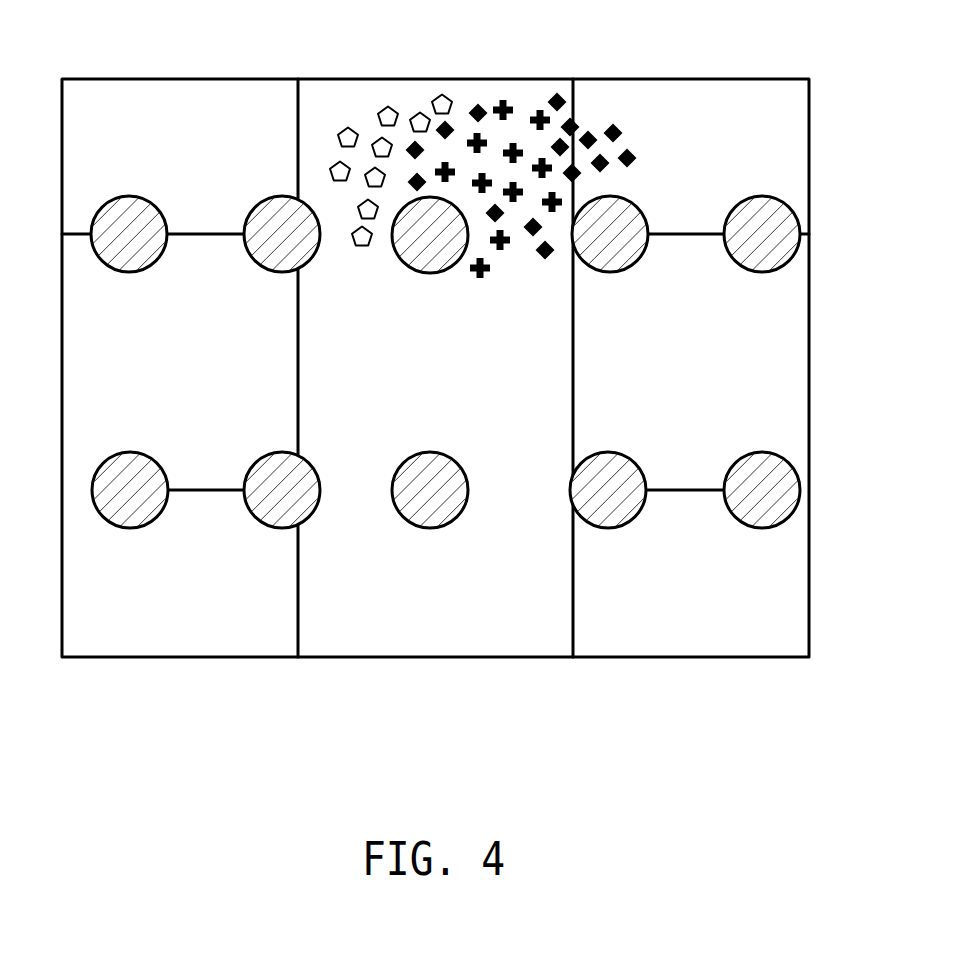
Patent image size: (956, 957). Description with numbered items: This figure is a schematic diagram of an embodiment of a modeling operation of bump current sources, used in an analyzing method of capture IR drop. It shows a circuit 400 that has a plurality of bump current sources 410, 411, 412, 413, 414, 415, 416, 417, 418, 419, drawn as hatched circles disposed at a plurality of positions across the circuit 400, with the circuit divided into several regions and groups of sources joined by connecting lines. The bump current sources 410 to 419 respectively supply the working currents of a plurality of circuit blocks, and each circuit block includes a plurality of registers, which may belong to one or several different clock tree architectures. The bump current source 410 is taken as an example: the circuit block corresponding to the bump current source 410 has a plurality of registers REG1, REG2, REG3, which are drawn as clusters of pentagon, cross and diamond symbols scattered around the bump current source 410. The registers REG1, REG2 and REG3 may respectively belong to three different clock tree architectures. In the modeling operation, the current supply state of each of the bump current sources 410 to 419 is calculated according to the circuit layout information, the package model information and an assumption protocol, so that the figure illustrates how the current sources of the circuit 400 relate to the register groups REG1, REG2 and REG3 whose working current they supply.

The circuit 400 is at (727, 78).
The bump current source 410 is at (439, 273).
The bump current source 411 is at (619, 272).
The bump current source 412 is at (771, 272).
The bump current source 413 is at (138, 272).
The bump current source 414 is at (276, 272).
The bump current source 415 is at (139, 528).
The bump current source 416 is at (276, 528).
The bump current source 417 is at (439, 528).
The bump current source 418 is at (617, 528).
The bump current source 419 is at (771, 528).
The register REG1 is at (338, 167).
The register REG2 is at (540, 110).
The register REG3 is at (627, 150).